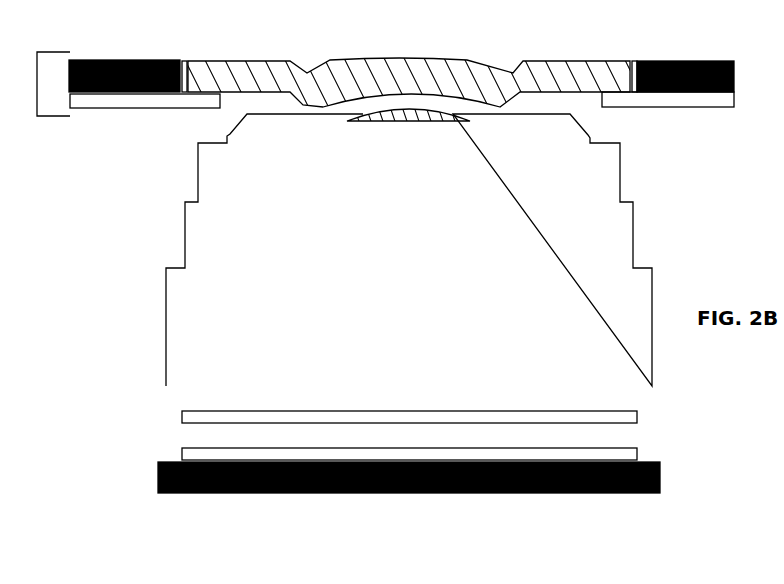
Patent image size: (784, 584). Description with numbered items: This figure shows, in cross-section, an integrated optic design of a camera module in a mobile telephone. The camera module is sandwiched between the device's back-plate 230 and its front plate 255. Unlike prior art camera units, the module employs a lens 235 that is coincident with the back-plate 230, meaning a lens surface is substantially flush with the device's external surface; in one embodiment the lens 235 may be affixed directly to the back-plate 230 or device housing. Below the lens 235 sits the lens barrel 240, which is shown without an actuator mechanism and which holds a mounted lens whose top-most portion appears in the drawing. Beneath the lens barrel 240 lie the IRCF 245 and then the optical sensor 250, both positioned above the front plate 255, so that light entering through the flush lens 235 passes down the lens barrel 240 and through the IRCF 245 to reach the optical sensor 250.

The back-plate 230 is at (55, 50).
The lens 235 is at (226, 60).
The lens barrel 240 is at (165, 282).
The IRCF 245 is at (182, 417).
The optical sensor 250 is at (182, 457).
The front plate 255 is at (158, 483).